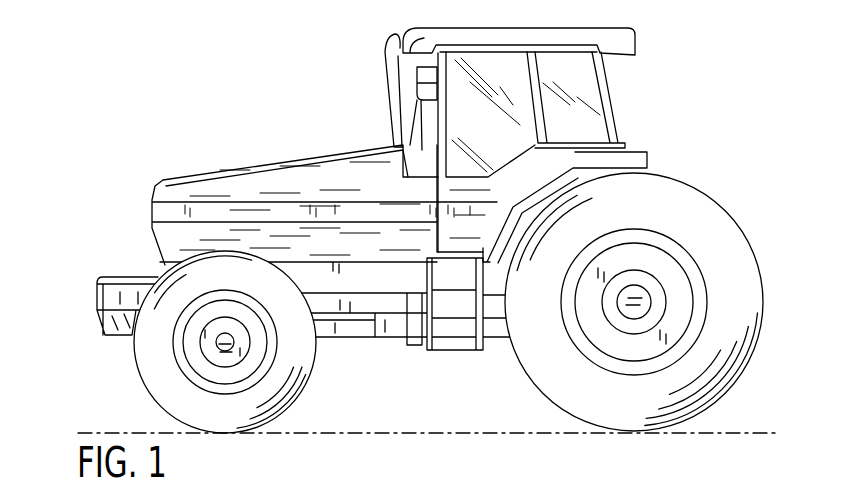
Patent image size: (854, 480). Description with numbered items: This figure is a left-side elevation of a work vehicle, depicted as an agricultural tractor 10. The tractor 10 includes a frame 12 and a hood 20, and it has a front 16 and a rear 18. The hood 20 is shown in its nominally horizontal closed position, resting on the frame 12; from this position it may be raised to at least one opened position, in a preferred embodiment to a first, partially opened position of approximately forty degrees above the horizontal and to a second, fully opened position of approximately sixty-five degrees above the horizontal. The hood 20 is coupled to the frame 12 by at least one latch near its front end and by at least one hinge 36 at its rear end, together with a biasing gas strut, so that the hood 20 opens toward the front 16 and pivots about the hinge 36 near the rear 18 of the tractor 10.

The agricultural tractor 10 is at (431, 230).
The frame 12 is at (357, 337).
The front 16 is at (78, 323).
The rear 18 is at (775, 222).
The hood 20 is at (270, 165).
The hinge 36 is at (446, 456).